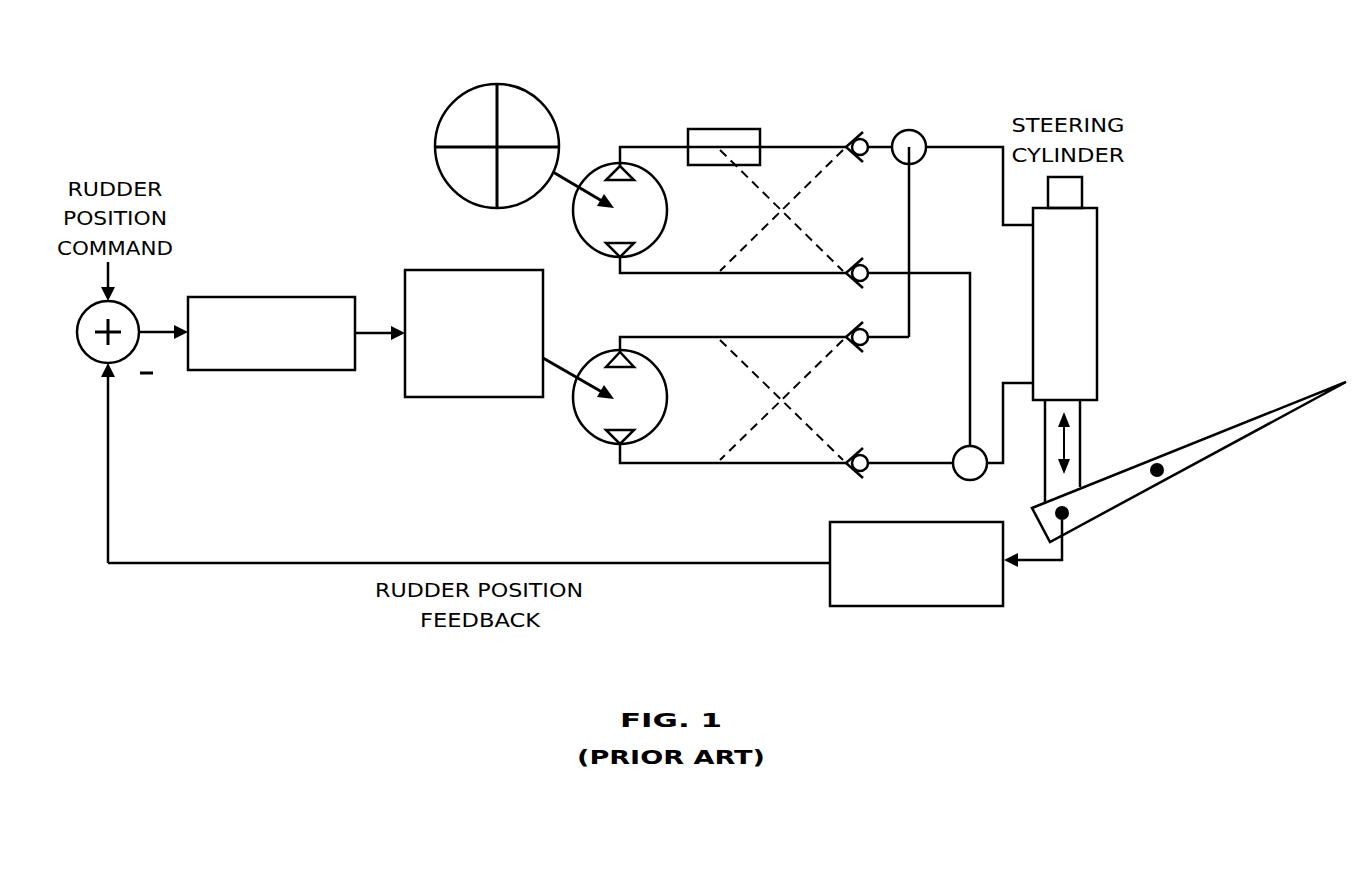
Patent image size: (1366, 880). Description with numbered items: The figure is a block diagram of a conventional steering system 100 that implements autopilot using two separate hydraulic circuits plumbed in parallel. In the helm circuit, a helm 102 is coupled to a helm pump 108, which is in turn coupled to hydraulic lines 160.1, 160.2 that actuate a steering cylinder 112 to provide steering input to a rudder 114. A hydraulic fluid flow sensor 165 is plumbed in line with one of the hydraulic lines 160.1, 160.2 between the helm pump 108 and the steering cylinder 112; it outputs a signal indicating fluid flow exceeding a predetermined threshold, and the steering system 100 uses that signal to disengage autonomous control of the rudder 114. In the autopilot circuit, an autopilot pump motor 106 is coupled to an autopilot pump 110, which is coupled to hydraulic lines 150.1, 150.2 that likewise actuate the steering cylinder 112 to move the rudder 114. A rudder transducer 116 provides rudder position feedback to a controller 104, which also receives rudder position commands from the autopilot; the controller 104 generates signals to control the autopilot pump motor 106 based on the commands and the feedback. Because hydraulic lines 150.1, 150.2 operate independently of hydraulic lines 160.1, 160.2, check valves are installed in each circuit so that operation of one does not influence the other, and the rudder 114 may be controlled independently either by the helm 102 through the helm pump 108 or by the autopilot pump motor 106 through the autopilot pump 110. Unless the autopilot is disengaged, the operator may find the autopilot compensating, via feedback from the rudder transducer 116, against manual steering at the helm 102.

The conventional steering system 100 is at (1004, 53).
The helm 102 is at (465, 133).
The controller 104 is at (267, 310).
The autopilot pump motor 106 is at (432, 282).
The helm pump 108 is at (593, 224).
The autopilot pump 110 is at (596, 412).
The steering cylinder 112 is at (1078, 290).
The rudder 114 is at (1188, 455).
The rudder transducer 116 is at (843, 521).
The hydraulic fluid flow sensor 165 is at (717, 128).
The hydraulic line 160.1 is at (797, 145).
The hydraulic line 160.2 is at (790, 278).
The hydraulic line 150.1 is at (893, 333).
The hydraulic line 150.2 is at (915, 460).